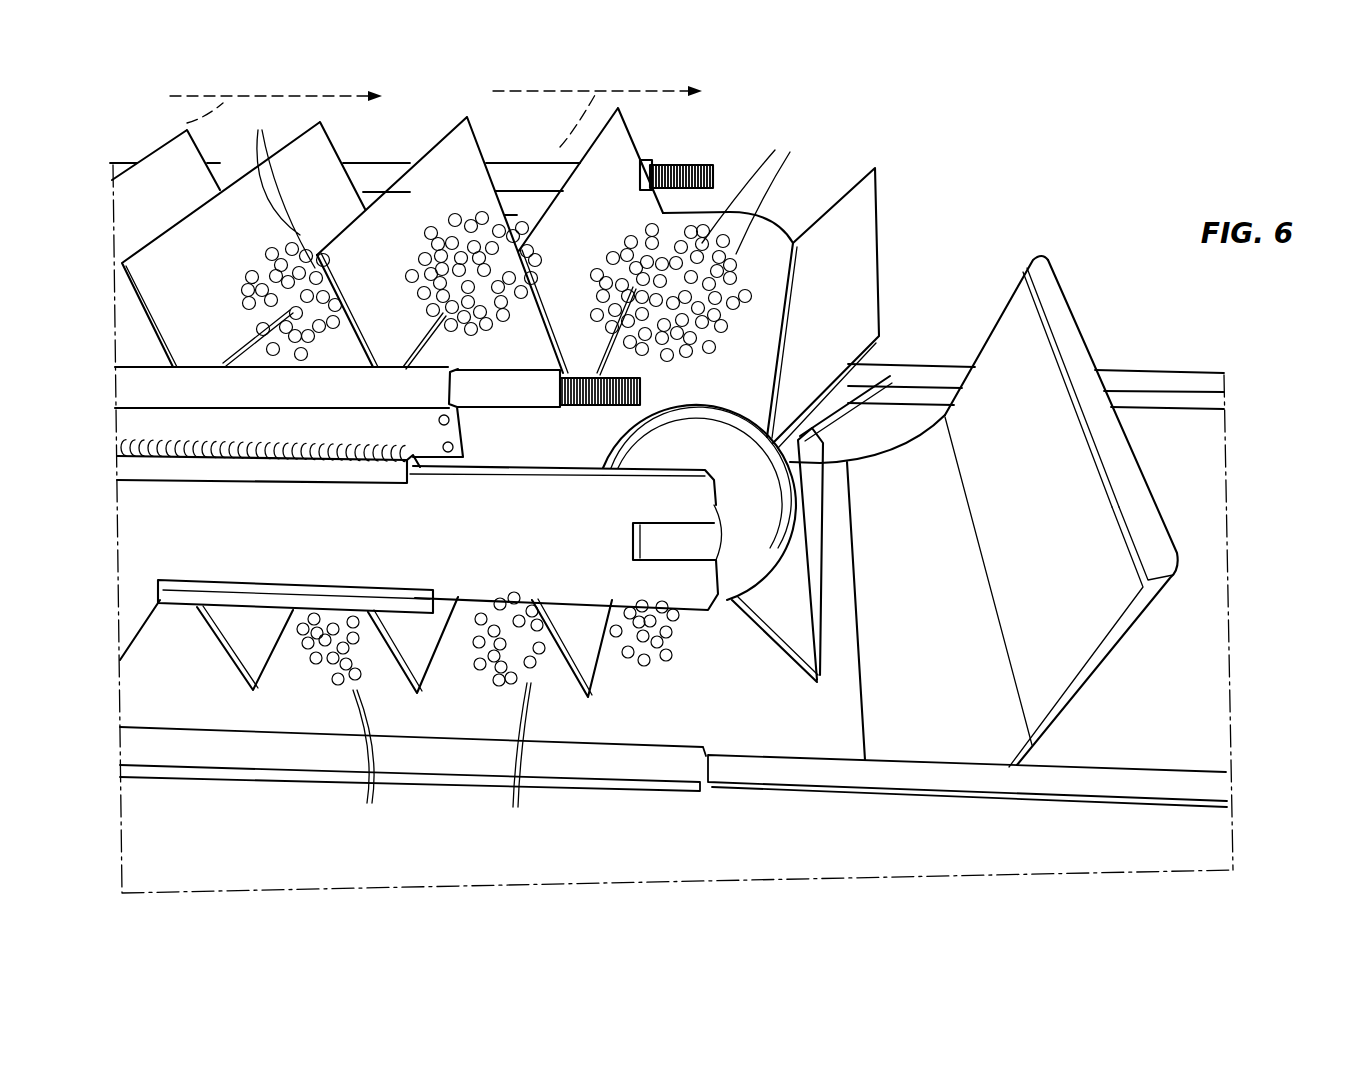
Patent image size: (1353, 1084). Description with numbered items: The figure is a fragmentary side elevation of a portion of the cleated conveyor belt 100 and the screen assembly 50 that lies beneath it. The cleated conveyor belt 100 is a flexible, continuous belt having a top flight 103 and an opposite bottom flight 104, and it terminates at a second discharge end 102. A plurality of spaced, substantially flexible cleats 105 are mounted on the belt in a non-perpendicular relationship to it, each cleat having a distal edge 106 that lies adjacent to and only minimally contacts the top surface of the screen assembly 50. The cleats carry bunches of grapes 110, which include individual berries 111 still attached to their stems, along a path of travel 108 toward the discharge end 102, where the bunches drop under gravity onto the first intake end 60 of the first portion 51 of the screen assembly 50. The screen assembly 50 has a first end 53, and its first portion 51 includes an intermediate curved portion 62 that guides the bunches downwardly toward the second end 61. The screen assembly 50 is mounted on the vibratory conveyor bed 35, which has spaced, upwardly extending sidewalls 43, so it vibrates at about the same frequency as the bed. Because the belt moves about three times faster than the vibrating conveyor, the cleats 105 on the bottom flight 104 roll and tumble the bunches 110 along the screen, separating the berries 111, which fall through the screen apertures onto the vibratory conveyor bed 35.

The vibratory conveyor bed 35 is at (1228, 370).
The sidewalls 43 is at (798, 772).
The screen assembly 50 is at (978, 338).
The first portion 51 is at (310, 719).
The first end 53 is at (1018, 327).
The first intake end 60 is at (1147, 535).
The second end 61 is at (145, 707).
The intermediate curved portion 62 is at (983, 668).
The cleated conveyor belt 100 is at (446, 185).
The second discharge end 102 is at (166, 178).
The top flight 103 is at (263, 355).
The bottom flight 104 is at (249, 620).
The flexible cleats 105 is at (330, 190).
The distal edge 106 is at (296, 140).
The path of travel 108 is at (426, 123).
The bunches of grapes 110 is at (306, 228).
The individual berries 111 is at (517, 474).